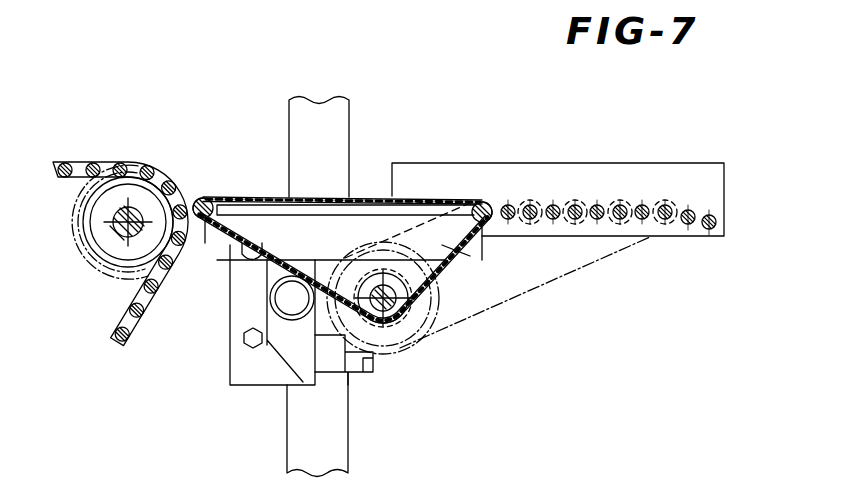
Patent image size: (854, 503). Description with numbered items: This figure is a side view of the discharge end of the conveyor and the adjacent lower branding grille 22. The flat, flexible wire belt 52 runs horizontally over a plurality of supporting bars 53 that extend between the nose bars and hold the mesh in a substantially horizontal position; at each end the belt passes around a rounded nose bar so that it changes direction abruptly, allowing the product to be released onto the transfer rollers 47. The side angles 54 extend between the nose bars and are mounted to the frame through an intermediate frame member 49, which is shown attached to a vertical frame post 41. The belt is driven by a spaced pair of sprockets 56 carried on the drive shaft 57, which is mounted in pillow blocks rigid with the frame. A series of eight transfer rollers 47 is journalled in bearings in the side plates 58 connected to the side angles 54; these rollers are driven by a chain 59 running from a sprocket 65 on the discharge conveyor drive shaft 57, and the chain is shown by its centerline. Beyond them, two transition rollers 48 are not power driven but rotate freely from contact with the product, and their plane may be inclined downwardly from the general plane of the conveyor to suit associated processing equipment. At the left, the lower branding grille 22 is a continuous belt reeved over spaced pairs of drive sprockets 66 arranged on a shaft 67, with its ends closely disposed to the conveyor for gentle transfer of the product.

The lower branding grille 22 is at (150, 317).
The support column 41 is at (343, 117).
The transfer rollers 47 is at (575, 204).
The transition rollers 48 is at (694, 214).
The intermediate frame member 49 is at (232, 301).
The flexible wire belt 52 is at (365, 195).
The supporting bars 53 is at (313, 218).
The side angles 54 is at (472, 262).
The drive sprockets 56 is at (402, 312).
The drive shaft 57 is at (398, 288).
The side plates 58 is at (640, 170).
The chain 59 is at (554, 280).
The sprocket 65 is at (440, 316).
The drive sprockets 66 is at (100, 270).
The shaft 67 is at (112, 215).